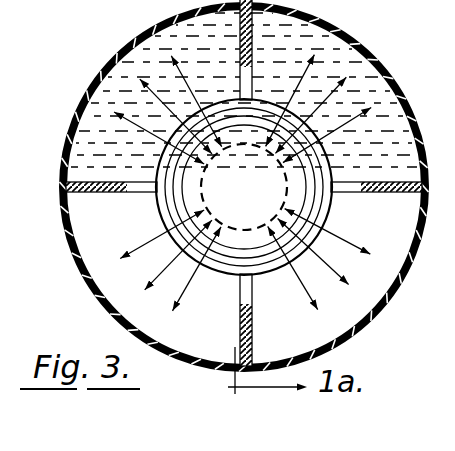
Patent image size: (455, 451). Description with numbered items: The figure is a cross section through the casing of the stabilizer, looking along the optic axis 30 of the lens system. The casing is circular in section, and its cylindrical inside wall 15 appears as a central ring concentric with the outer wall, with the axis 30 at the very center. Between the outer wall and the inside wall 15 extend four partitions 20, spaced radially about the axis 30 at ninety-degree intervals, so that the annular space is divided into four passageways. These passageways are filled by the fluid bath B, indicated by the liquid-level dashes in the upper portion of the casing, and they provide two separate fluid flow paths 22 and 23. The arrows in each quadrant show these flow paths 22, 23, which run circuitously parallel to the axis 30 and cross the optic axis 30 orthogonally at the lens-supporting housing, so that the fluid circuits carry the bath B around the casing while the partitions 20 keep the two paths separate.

The inside walls 15 is at (159, 199).
The partitions 20 is at (122, 183).
The fluid flow path 22 is at (178, 305).
The fluid flow path 23 is at (147, 84).
The axis 30 is at (247, 186).
The fluid bath B is at (244, 90).